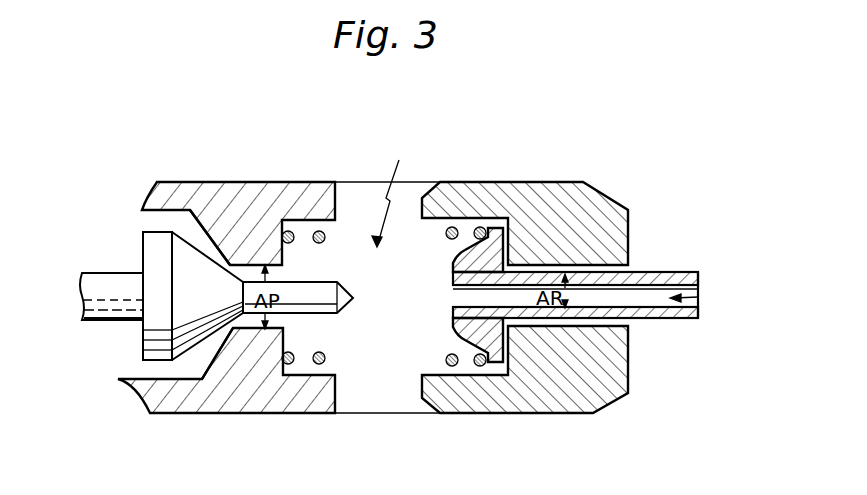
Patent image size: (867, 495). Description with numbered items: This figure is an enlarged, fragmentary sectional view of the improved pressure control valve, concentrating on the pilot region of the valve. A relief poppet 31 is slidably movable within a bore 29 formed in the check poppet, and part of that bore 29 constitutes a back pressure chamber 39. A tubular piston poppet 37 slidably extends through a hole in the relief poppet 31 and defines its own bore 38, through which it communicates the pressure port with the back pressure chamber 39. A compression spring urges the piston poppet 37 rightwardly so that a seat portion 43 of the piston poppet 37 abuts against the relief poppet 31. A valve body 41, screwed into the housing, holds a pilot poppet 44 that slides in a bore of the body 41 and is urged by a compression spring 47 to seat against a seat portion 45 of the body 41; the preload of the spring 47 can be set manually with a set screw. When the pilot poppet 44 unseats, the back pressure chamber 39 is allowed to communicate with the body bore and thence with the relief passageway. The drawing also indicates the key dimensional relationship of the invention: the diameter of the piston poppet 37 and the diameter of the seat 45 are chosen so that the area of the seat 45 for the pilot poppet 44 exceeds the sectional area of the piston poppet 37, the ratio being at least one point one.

The bore 29 is at (382, 414).
The relief poppet 31 is at (618, 210).
The piston poppet 37 is at (693, 272).
The bore 38 is at (698, 297).
The back pressure chamber 39 is at (392, 192).
The valve body 41 is at (253, 187).
The seat portion 43 is at (507, 243).
The pilot poppet 44 is at (108, 272).
The seat portion 45 is at (228, 248).
The compression spring 47 is at (452, 226).